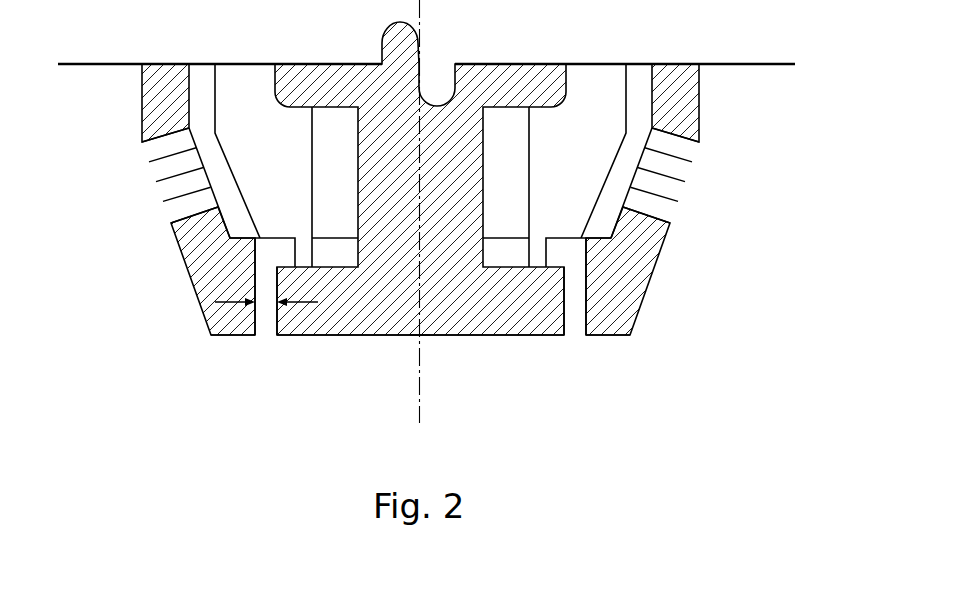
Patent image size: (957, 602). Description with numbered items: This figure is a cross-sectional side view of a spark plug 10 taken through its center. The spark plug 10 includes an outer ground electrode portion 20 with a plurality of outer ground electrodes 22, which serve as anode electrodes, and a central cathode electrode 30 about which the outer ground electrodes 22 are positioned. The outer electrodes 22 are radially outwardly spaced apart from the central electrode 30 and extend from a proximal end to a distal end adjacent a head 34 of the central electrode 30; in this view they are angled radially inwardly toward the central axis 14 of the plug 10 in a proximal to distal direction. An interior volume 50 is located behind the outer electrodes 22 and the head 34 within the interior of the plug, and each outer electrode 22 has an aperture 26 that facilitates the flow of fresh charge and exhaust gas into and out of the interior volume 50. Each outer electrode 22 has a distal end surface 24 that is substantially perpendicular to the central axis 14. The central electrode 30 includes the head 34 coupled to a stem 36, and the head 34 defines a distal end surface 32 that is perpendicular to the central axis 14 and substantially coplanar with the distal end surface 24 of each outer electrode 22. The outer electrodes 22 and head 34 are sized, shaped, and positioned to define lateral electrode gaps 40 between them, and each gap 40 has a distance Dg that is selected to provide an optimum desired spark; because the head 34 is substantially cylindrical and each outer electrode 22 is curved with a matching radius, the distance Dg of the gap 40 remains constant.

The spark plug 10 is at (426, 242).
The central axis 14 is at (428, 337).
The outer ground electrode portion 20 is at (426, 237).
The outer ground electrode 22 is at (192, 277).
The distal end surface 24 is at (225, 337).
The aperture 26 is at (160, 170).
The central cathode electrode 30 is at (390, 231).
The distal end surface 32 is at (498, 337).
The head 34 is at (372, 337).
The stem 36 is at (358, 128).
The lateral electrode gap 40 is at (267, 337).
The interior volume 50 is at (288, 191).
The gap distance Dg is at (315, 337).